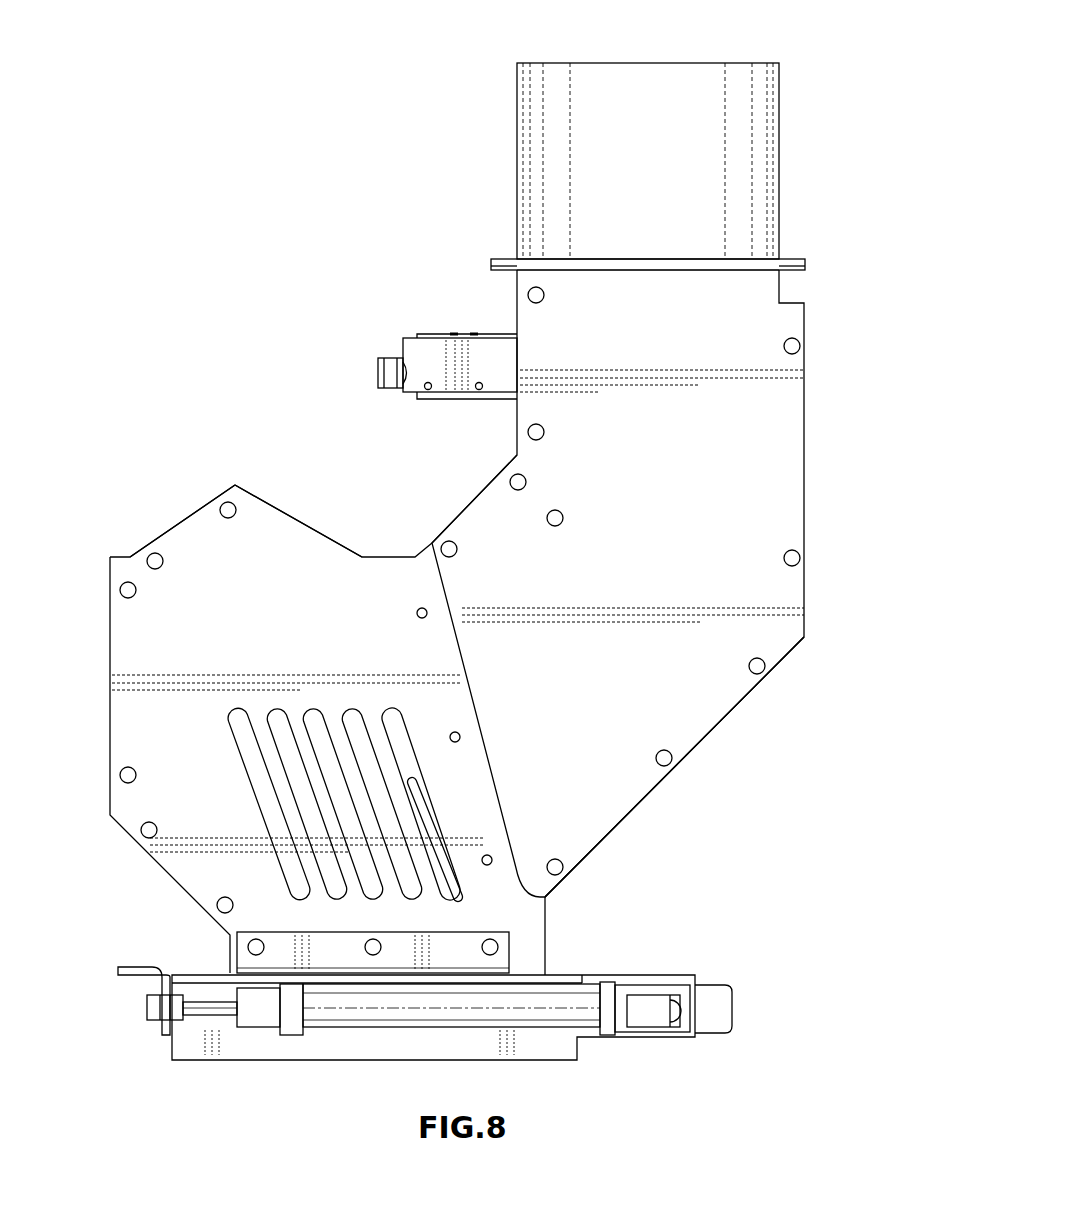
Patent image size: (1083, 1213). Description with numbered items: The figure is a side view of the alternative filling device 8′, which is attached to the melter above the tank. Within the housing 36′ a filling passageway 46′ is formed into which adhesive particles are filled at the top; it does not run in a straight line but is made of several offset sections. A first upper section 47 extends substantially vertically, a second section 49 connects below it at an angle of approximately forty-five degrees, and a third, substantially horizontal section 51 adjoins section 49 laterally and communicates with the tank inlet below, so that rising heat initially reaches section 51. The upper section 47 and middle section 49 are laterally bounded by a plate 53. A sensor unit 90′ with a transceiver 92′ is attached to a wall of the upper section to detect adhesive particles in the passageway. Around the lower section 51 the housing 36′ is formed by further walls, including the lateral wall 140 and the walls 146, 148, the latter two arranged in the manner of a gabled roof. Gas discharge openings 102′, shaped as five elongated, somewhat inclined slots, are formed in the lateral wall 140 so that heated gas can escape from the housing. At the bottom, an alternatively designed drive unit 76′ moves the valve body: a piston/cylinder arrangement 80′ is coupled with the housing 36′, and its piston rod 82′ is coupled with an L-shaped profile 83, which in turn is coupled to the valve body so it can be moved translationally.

The filling device 8′ is at (367, 186).
The filling passageway 46′ is at (689, 93).
The first upper section 47 is at (648, 297).
The second section 49 is at (674, 767).
The housing 36′ is at (455, 507).
The plate 53 is at (738, 711).
The sensor unit 90′ is at (359, 375).
The transceiver 92′ is at (432, 350).
The lateral wall 140 is at (123, 648).
The wall 146 is at (180, 520).
The wall 148 is at (265, 497).
The third section 51 is at (373, 782).
The gas discharge openings 102′ is at (248, 722).
The L-shaped profile 83 is at (138, 960).
The piston/cylinder arrangement 80′ is at (547, 1018).
The piston rod 82′ is at (207, 1010).
The drive unit 76′ is at (745, 1044).